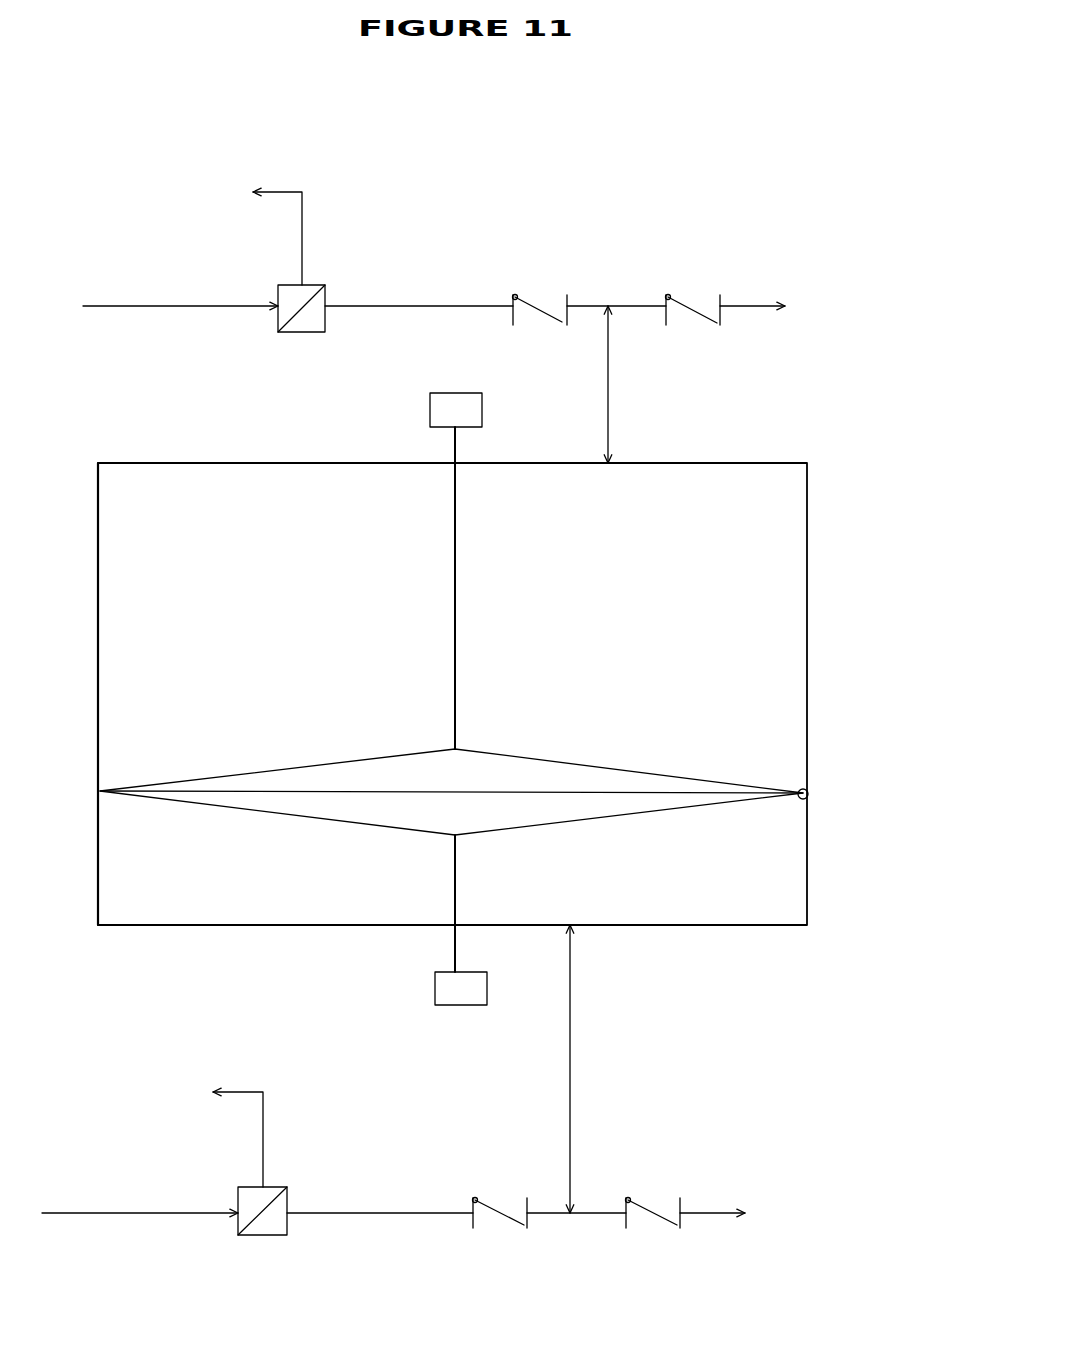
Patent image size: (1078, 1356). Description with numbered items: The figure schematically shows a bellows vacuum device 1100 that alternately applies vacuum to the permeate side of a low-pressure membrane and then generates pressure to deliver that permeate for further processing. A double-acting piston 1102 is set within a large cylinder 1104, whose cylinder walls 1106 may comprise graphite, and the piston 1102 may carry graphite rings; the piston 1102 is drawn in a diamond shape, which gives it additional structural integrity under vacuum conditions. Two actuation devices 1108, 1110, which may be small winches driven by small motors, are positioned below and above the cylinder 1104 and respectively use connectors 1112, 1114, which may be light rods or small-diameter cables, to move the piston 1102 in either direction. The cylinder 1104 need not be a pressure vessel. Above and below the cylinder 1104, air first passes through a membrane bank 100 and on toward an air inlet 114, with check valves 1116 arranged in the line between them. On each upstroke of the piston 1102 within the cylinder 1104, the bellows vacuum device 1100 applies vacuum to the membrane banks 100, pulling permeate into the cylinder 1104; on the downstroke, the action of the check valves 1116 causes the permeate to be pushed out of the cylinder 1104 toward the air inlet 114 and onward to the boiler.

The bellows vacuum device 1100 is at (708, 162).
The membrane bank 100 is at (342, 278).
The check valve 1116 is at (547, 292).
The air inlet 114 is at (761, 765).
The actuation device 1110 is at (413, 412).
The actuation device 1108 is at (435, 1000).
The connector 1114 is at (473, 598).
The connector 1112 is at (473, 898).
The cylinder wall 1106 is at (115, 598).
The cylinder 1104 is at (818, 587).
The double-acting piston 1102 is at (700, 757).